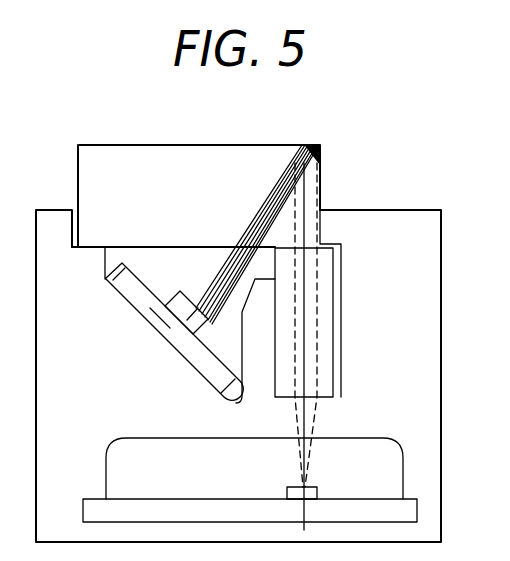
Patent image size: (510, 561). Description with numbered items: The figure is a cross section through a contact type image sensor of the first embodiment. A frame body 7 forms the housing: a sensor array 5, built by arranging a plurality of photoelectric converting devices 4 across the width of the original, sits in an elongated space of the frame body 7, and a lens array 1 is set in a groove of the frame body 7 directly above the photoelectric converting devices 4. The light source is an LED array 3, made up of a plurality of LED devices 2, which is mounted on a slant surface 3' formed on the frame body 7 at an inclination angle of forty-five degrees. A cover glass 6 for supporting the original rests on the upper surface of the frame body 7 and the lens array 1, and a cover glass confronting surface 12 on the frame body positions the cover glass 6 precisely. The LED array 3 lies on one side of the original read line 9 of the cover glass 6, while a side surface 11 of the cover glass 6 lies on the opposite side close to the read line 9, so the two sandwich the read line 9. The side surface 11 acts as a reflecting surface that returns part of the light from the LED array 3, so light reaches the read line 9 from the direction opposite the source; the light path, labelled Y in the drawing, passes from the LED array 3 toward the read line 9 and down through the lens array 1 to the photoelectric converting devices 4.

The lens array 1 is at (330, 297).
The LED device 2 is at (181, 290).
The LED array 3 is at (174, 301).
The slant surface 3' is at (128, 335).
The photoelectric converting device 4 is at (285, 487).
The sensor array 5 is at (410, 510).
The cover glass 6 is at (203, 160).
The frame body 7 is at (425, 336).
The read line 9 is at (305, 147).
The side surface 11 is at (323, 163).
The cover glass confronting surface 12 is at (323, 207).
The light beam Y is at (270, 205).